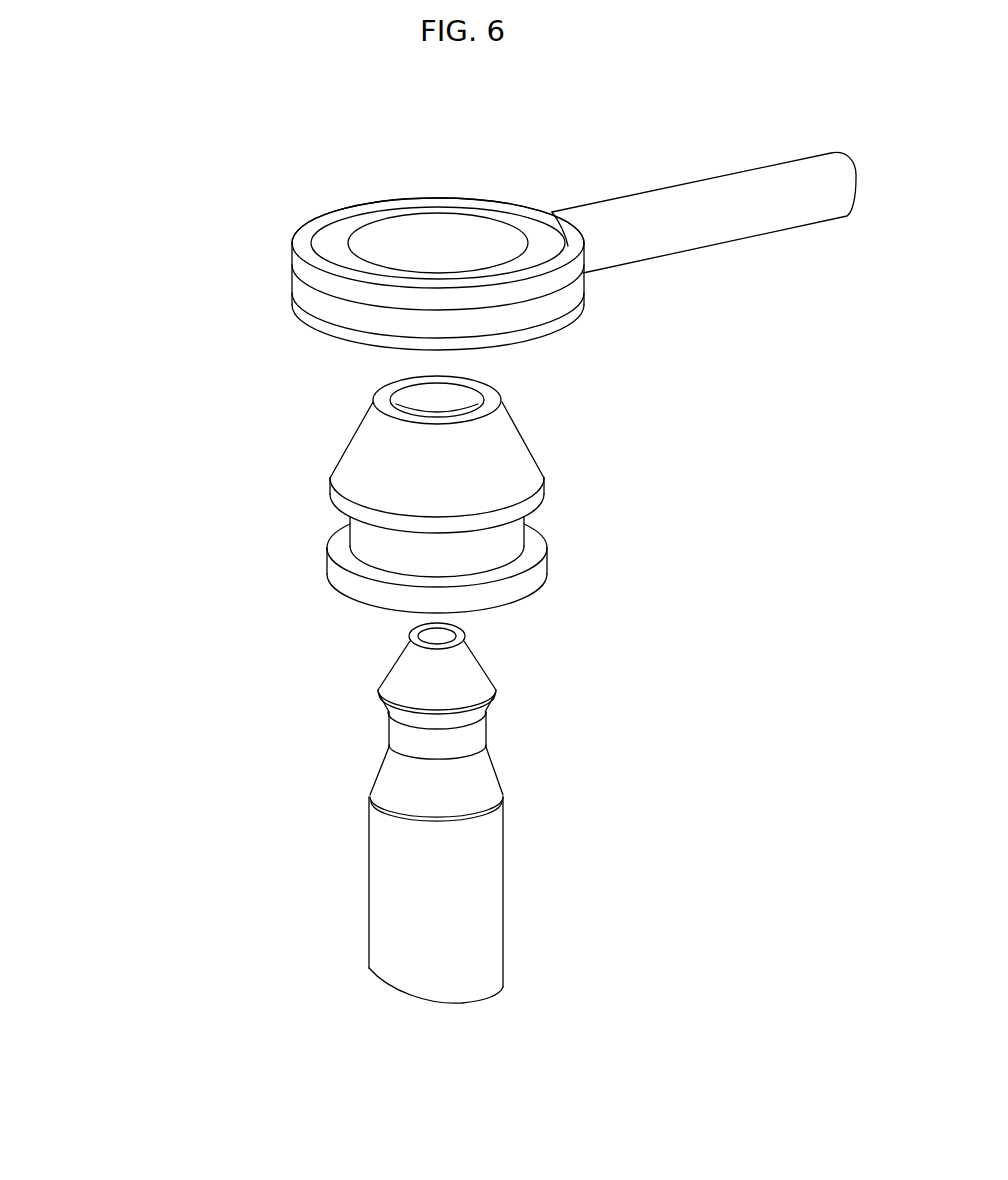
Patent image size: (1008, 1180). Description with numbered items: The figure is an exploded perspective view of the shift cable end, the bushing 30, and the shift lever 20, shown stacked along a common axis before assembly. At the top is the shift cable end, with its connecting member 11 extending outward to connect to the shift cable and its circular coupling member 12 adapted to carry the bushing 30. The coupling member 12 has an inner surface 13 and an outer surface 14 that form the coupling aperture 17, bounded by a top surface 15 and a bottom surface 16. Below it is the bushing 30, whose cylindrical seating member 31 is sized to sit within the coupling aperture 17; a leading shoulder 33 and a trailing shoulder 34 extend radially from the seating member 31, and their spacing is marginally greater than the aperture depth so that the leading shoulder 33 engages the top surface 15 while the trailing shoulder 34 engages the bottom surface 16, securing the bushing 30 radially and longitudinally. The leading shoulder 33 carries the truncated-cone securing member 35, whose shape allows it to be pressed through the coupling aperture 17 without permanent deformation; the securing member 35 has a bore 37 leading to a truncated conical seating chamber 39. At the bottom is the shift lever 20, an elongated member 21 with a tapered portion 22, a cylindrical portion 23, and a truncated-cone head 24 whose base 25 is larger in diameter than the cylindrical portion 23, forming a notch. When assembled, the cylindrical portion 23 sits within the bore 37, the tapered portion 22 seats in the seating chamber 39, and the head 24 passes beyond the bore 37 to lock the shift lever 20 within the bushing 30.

The connecting member 11 is at (658, 248).
The coupling member 12 is at (413, 186).
The inner surface 13 is at (496, 219).
The outer surface 14 is at (297, 292).
The top surface 15 is at (330, 248).
The bottom surface 16 is at (557, 327).
The coupling aperture 17 is at (392, 243).
The shift lever 20 is at (489, 813).
The elongated member 21 is at (390, 906).
The tapered portion 22 is at (398, 784).
The cylindrical portion 23 is at (467, 742).
The head 24 is at (412, 669).
The base 25 is at (490, 712).
The bushing 30 is at (431, 488).
The seating member 31 is at (508, 545).
The leading shoulder 33 is at (533, 502).
The trailing shoulder 34 is at (535, 578).
The securing member 35 is at (505, 443).
The bore 37 is at (410, 394).
The seating chamber 39 is at (433, 407).